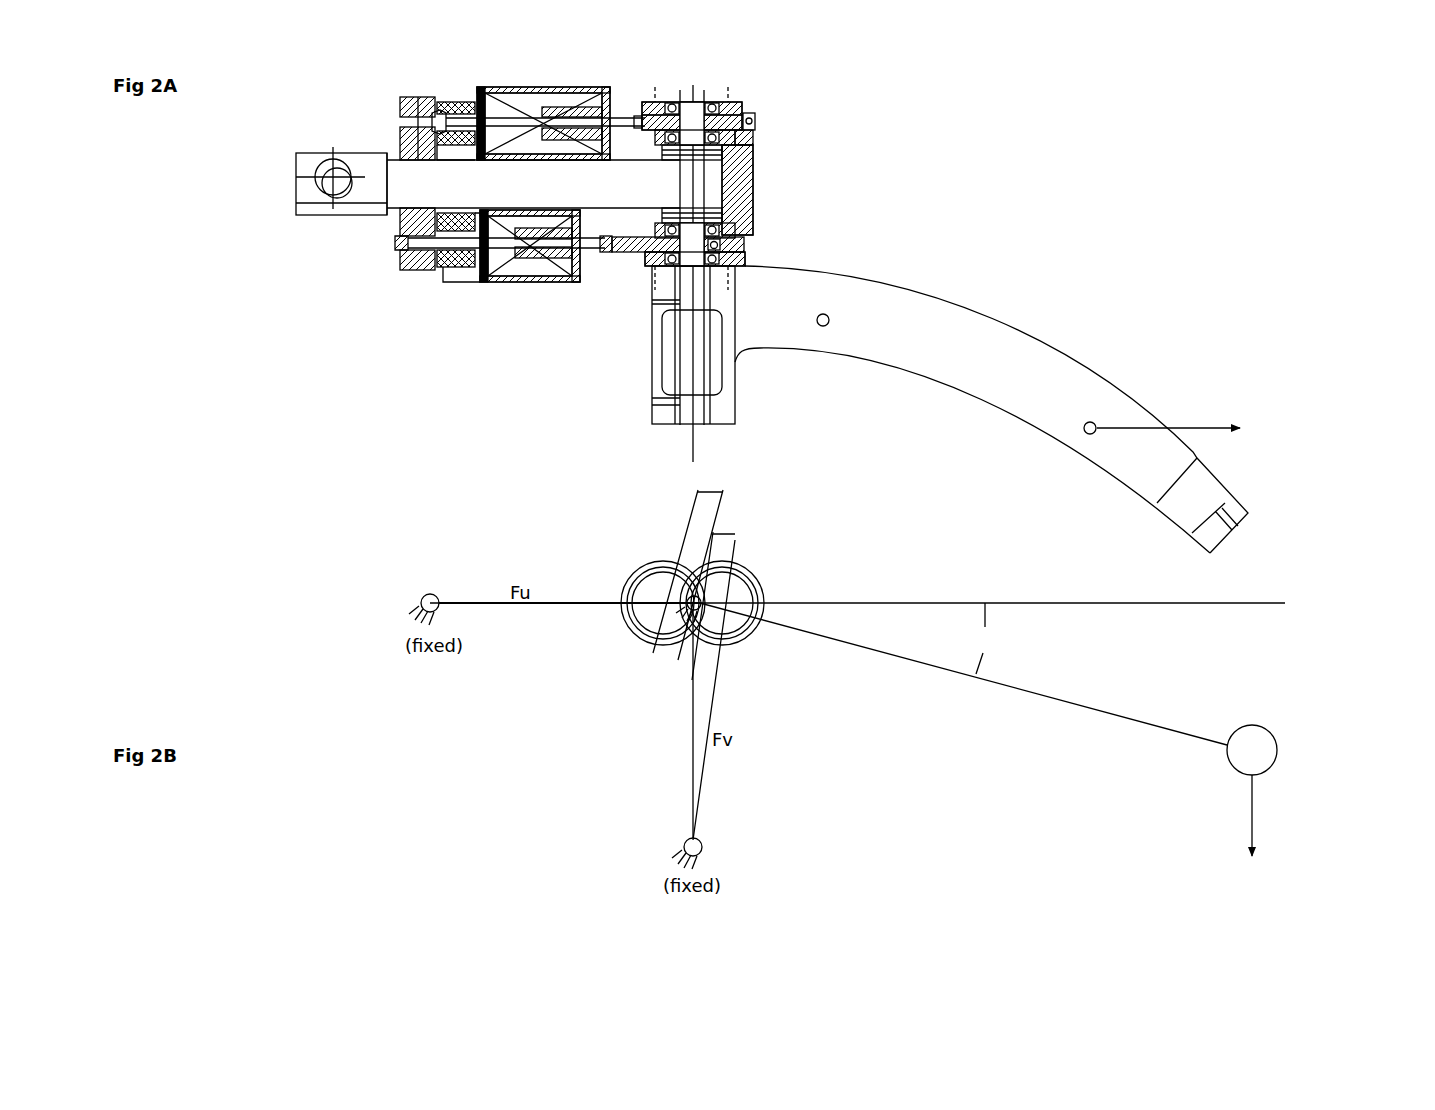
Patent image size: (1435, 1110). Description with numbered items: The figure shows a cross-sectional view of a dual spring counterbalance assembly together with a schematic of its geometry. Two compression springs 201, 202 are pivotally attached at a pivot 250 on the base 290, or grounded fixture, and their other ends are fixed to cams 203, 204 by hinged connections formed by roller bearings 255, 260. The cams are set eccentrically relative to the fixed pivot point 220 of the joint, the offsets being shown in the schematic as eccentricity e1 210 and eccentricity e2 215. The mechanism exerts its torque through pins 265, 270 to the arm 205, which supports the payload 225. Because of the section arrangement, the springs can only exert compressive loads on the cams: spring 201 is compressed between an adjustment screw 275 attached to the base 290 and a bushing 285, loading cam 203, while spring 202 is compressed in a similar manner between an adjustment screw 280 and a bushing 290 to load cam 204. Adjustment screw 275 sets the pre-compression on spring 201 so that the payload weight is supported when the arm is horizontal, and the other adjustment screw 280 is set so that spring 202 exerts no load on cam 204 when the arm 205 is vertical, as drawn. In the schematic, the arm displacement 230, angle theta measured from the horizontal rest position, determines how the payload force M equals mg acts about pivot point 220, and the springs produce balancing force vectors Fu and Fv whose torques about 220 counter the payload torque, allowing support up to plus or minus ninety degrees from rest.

In FIG. 2A, the spring 201 is at (484, 278).
In FIG. 2B, the spring 201 is at (702, 765).
In FIG. 2A, the spring 202 is at (490, 98).
In FIG. 2B, the spring 202 is at (560, 599).
In FIG. 2A, the cam 203 is at (635, 253).
In FIG. 2B, the cam 203 is at (752, 632).
In FIG. 2A, the cam 204 is at (746, 114).
In FIG. 2B, the cam 204 is at (644, 560).
In FIG. 2A, the arm 205 is at (1142, 405).
In FIG. 2B, the arm 205 is at (918, 663).
In FIG. 2B, the eccentricity e1 210 is at (733, 534).
In FIG. 2B, the eccentricity e2 215 is at (723, 492).
In FIG. 2B, the pivot point 220 is at (707, 600).
In FIG. 2A, the payload 225 is at (1210, 388).
In FIG. 2B, the payload 225 is at (1325, 796).
In FIG. 2B, the arm displacement angle 230 is at (979, 638).
In FIG. 2A, the pivot 250 is at (415, 270).
In FIG. 2A, the roller bearing 255 is at (764, 119).
In FIG. 2A, the roller bearing 260 is at (604, 256).
In FIG. 2A, the pin 265 is at (748, 264).
In FIG. 2A, the pin 270 is at (654, 282).
In FIG. 2A, the adjustment screw 275 is at (398, 249).
In FIG. 2A, the adjustment screw 280 is at (427, 100).
In FIG. 2A, the bushing 285 is at (535, 262).
In FIG. 2A, the base 290 is at (303, 220).